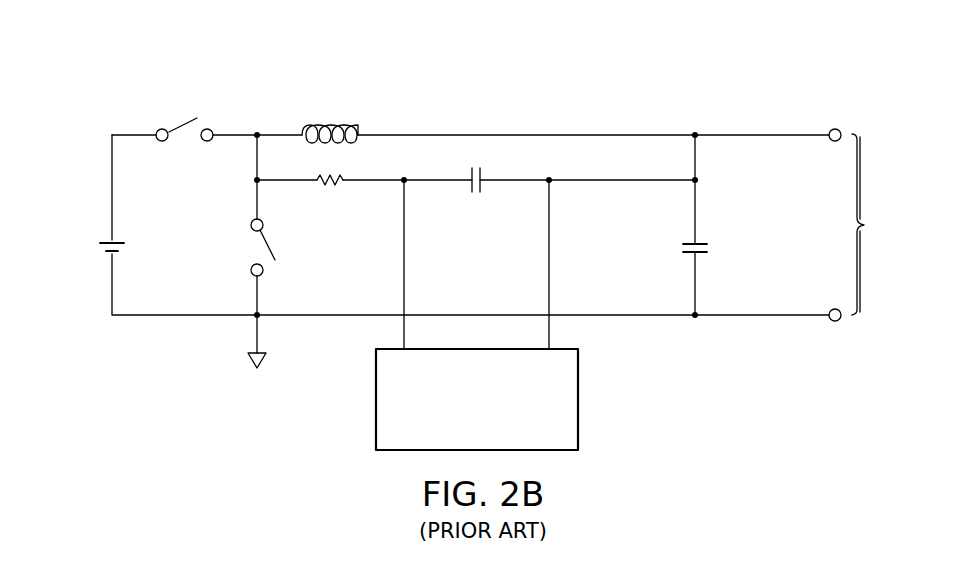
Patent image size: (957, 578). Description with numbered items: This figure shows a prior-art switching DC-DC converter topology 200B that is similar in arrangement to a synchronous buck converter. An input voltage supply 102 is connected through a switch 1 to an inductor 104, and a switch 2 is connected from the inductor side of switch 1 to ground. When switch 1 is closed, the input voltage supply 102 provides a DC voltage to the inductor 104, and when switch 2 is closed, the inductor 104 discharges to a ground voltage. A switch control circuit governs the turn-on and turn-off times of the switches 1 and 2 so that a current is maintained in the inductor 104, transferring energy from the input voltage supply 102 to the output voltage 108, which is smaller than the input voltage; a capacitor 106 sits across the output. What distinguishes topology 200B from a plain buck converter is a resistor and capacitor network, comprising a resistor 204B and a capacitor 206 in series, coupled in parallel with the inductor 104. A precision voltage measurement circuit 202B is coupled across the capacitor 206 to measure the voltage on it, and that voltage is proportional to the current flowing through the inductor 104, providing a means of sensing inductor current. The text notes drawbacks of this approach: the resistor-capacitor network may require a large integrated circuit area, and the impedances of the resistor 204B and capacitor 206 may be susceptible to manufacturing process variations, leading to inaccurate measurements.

The switching DC-DC converter topology 200B is at (779, 57).
The switch 1 is at (182, 123).
The switch 2 is at (263, 246).
The input voltage supply 102 is at (100, 250).
The inductor 104 is at (330, 125).
The capacitor 106 is at (708, 248).
The output voltage 108 is at (870, 225).
The precision voltage measurement circuit 202B is at (580, 400).
The resistor 204B is at (329, 188).
The capacitor 206 is at (477, 192).